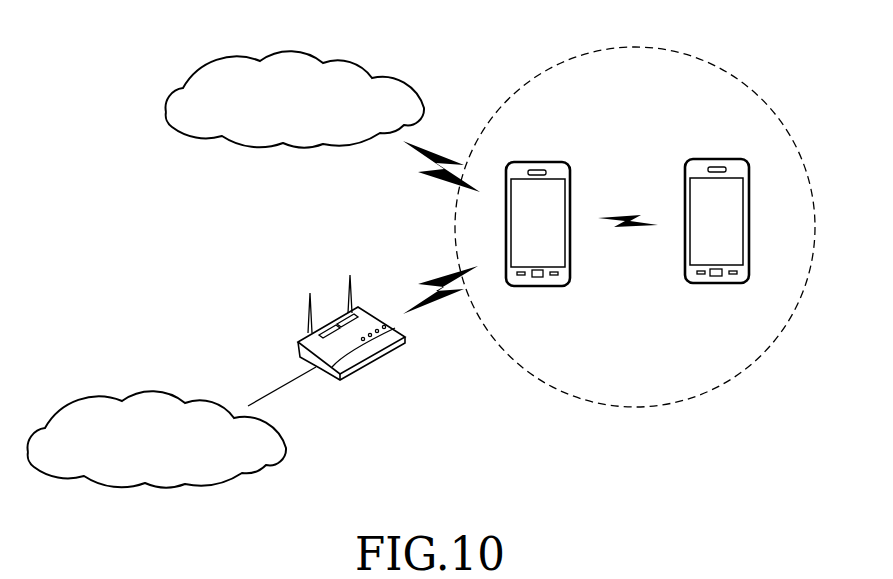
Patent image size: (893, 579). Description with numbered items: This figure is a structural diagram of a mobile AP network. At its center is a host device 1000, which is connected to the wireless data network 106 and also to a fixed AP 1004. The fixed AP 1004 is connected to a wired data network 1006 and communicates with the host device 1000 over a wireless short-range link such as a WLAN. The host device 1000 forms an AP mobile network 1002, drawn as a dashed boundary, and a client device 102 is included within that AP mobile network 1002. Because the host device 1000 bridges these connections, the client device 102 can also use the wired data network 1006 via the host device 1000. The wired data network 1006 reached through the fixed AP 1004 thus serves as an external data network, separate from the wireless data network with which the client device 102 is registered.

The wireless data network 106 is at (289, 52).
The wired data network 1006 is at (150, 392).
The fixed AP 1004 is at (370, 362).
The AP mobile network 1002 is at (634, 47).
The host device 1000 is at (537, 161).
The client device 102 is at (717, 158).